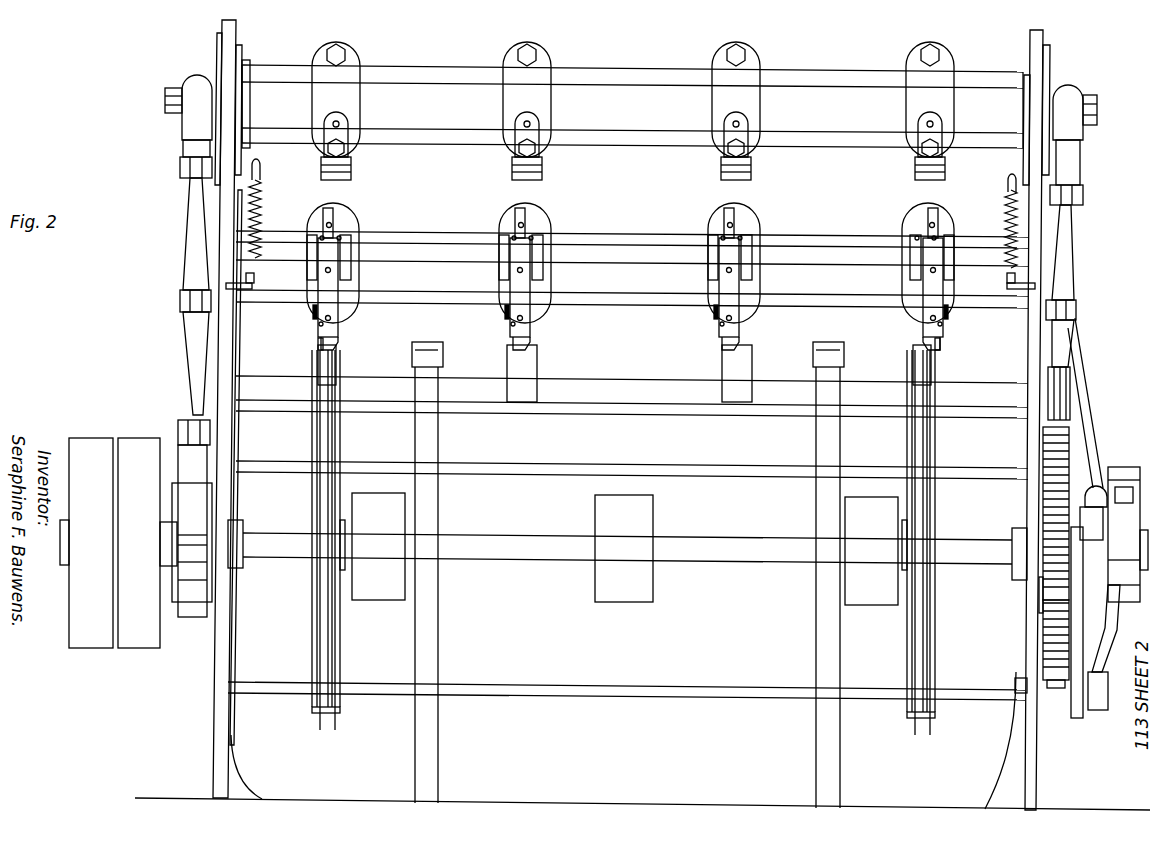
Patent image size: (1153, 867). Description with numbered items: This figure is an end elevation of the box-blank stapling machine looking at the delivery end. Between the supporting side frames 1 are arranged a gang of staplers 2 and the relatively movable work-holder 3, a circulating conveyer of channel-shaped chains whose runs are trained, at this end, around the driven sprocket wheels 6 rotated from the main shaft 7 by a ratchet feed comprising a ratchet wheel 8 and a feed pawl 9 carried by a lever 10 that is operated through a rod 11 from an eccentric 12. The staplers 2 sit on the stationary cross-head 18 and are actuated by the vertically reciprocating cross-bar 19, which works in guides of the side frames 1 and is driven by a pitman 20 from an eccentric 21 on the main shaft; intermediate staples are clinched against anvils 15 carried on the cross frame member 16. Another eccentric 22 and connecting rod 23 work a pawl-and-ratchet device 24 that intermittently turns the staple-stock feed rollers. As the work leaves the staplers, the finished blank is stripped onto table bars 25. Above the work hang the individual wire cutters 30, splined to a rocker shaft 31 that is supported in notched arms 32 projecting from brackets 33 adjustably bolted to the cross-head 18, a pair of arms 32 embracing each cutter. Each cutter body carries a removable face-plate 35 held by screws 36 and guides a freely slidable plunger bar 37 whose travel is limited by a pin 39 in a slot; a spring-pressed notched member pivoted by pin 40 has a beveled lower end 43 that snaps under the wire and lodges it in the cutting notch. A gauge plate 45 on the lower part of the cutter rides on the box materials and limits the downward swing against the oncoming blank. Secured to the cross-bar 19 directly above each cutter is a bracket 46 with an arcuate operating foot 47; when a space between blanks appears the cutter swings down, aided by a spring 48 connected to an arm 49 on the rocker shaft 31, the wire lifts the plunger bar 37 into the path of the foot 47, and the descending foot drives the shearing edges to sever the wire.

The supporting side frames 1 is at (222, 45).
The staplers 2 is at (634, 280).
The work-holder 3 is at (335, 712).
The driven sprocket wheels 6 is at (318, 608).
The main shaft 7 is at (68, 531).
The ratchet wheel 8 is at (1050, 640).
The feed pawl 9 is at (1080, 665).
The lever 10 is at (1085, 716).
The rod 11 is at (1108, 646).
The eccentric 12 is at (1120, 467).
The anvils 15 is at (537, 363).
The cross frame member 16 is at (625, 382).
The stationary cross-head 18 is at (465, 303).
The vertically reciprocating cross-bar 19 is at (428, 66).
The pitman 20 is at (188, 268).
The eccentric 21 is at (196, 617).
The eccentric 22 is at (1078, 448).
The connecting rod 23 is at (1088, 402).
The pawl-and-ratchet device 24 is at (1070, 242).
The table bars 25 is at (427, 342).
The wire cutters 30 is at (312, 308).
The rocker shaft 31 is at (632, 240).
The notched arms 32 is at (352, 266).
The brackets 33 is at (345, 210).
The face-plate 35 is at (336, 300).
The screws 36 is at (342, 240).
The plunger bar 37 is at (329, 212).
The pin 39 is at (326, 282).
The pin 40 is at (340, 322).
The beveled lower end 43 is at (338, 348).
The gauge plate 45 is at (318, 346).
The bracket 46 is at (340, 130).
The operating foot 47 is at (351, 168).
The spring 48 is at (259, 228).
The arm 49 is at (256, 180).